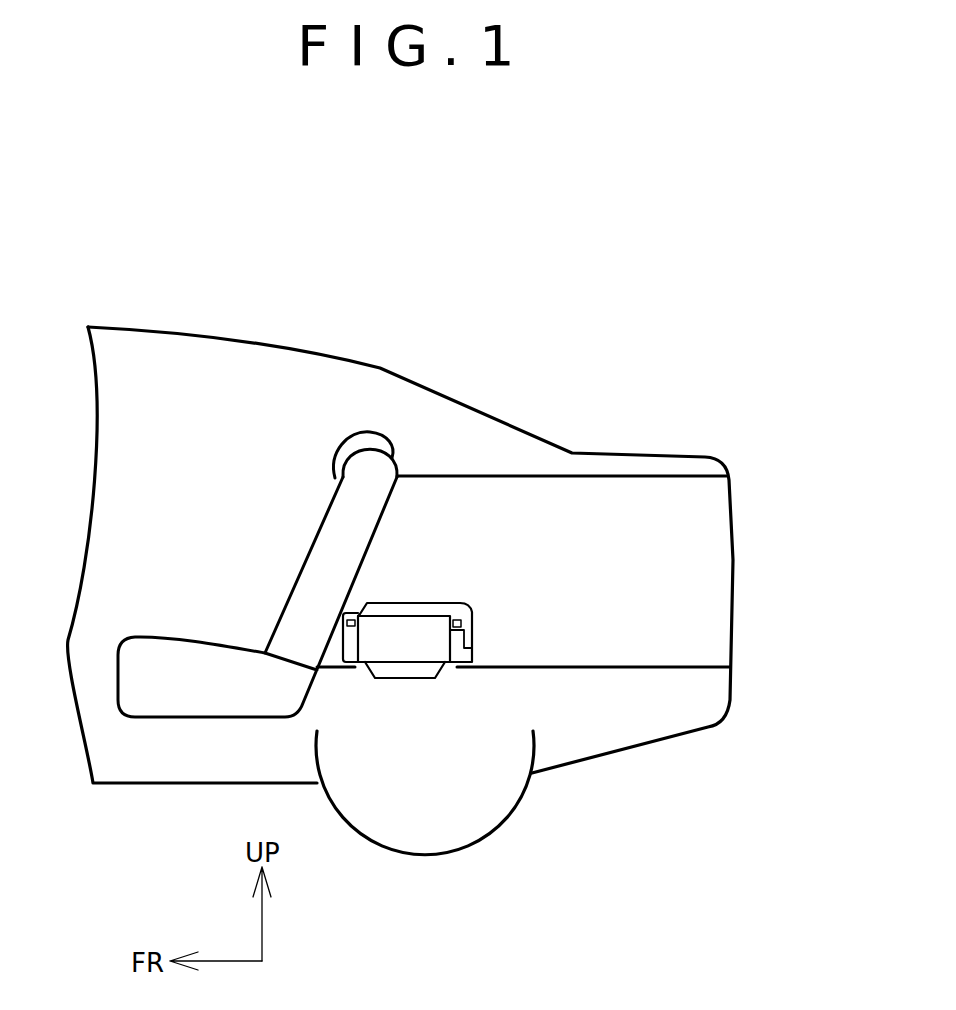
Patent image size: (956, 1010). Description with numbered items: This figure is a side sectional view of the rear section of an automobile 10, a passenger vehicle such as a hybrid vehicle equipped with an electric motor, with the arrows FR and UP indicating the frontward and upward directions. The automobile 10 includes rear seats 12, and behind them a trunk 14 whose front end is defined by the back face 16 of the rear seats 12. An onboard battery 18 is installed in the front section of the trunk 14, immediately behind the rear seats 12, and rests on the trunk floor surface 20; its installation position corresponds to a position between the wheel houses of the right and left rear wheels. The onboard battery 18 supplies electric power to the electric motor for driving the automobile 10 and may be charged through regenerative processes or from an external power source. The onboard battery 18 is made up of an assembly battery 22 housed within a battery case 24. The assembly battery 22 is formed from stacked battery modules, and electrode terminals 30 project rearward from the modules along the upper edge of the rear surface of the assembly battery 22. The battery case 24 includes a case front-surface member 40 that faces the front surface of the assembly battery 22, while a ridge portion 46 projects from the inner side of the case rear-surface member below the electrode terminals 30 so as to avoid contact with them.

The automobile 10 is at (420, 317).
The rear seats 12 is at (330, 555).
The trunk 14 is at (537, 534).
The back face 16 is at (387, 507).
The onboard battery 18 is at (476, 649).
The trunk floor surface 20 is at (622, 663).
The assembly battery 22 is at (402, 645).
The battery case 24 is at (405, 600).
The electrode terminal 30 is at (477, 618).
The case front-surface member 40 is at (472, 640).
The ridge portion 46 is at (458, 640).